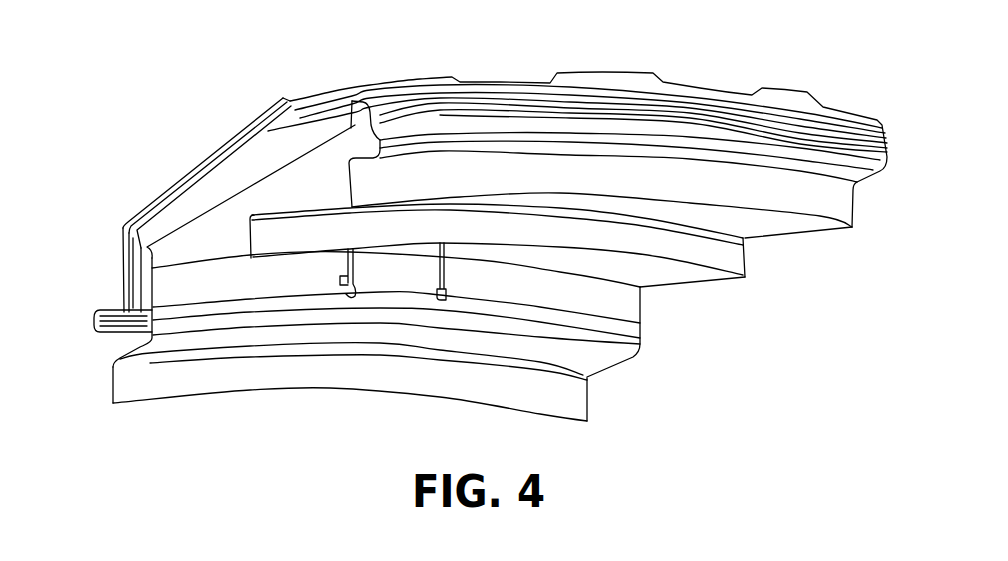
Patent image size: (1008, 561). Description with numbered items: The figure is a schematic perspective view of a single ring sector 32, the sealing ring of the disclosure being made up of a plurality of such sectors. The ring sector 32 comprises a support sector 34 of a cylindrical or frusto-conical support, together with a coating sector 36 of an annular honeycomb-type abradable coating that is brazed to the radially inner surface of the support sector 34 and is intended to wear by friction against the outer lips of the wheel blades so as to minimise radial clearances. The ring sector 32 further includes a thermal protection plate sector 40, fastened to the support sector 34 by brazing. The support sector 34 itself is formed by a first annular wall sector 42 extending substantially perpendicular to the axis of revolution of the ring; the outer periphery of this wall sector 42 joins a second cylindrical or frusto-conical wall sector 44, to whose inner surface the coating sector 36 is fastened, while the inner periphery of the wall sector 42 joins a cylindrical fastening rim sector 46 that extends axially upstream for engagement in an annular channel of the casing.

The ring sector 32 is at (808, 57).
The support sector 34 is at (202, 195).
The coating sector 36 is at (310, 173).
The thermal protection plate sector 40 is at (307, 393).
The first annular wall sector 42 is at (132, 290).
The second wall sector 44 is at (175, 227).
The fastening rim sector 46 is at (112, 310).